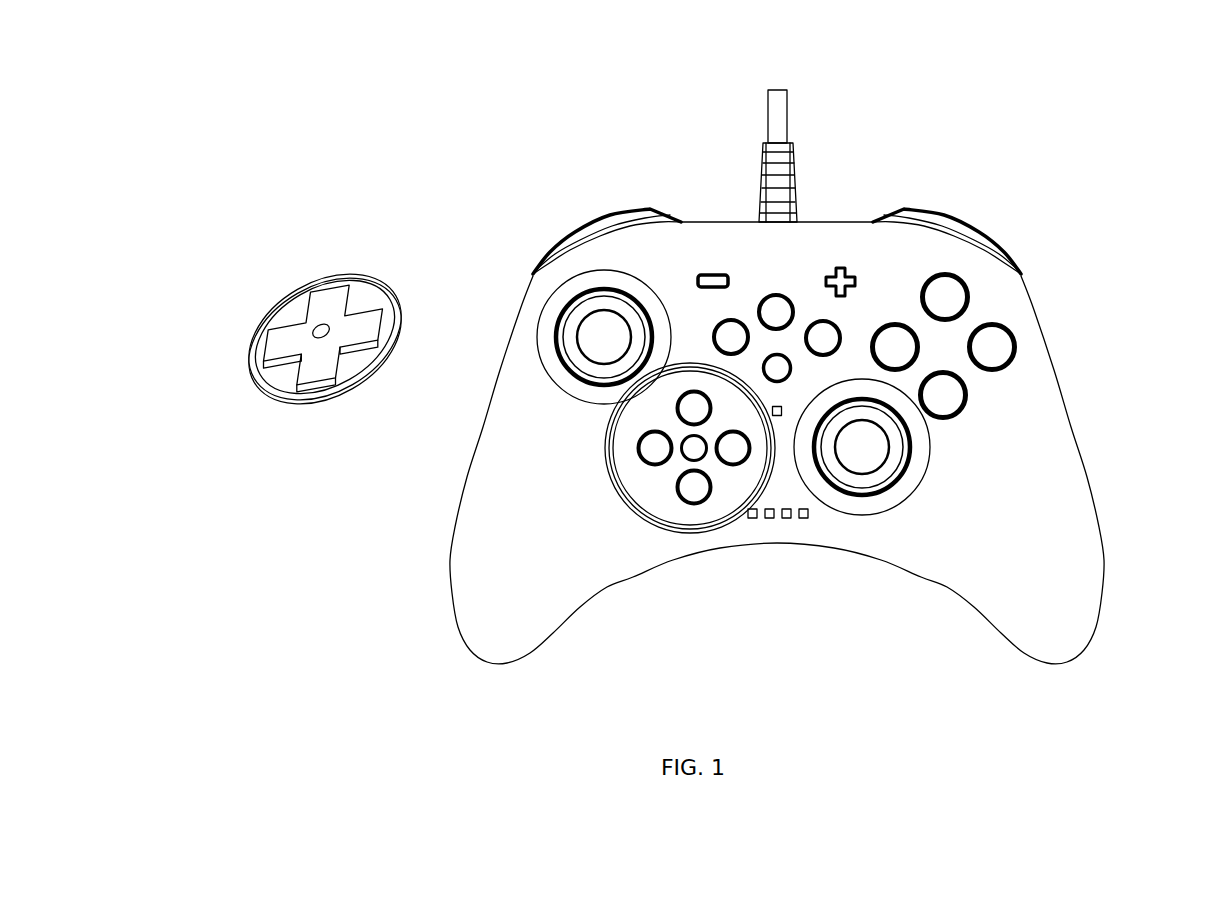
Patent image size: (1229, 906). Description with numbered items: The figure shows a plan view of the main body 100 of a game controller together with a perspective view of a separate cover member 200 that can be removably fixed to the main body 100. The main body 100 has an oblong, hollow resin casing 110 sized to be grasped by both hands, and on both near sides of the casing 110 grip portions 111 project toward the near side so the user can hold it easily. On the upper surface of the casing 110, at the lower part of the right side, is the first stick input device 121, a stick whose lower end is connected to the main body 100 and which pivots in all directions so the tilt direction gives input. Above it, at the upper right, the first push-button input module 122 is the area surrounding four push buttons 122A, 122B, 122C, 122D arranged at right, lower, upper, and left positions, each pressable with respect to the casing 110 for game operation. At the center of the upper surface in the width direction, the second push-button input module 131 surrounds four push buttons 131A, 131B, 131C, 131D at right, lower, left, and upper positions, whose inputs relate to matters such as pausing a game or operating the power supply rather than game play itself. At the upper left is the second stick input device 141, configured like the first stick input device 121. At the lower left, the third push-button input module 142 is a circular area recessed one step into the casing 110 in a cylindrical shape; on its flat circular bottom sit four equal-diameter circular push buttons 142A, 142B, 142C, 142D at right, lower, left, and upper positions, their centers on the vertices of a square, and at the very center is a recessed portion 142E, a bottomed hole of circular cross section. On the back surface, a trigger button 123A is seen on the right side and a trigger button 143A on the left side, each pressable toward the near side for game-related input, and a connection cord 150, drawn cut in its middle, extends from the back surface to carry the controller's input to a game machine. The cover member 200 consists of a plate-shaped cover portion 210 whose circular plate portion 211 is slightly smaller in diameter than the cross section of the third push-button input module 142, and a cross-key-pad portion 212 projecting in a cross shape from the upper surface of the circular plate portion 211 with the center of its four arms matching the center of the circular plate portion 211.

The main body 100 is at (1121, 146).
The casing 110 is at (852, 550).
The grip portions 111 is at (468, 625).
The first stick input device 121 is at (873, 460).
The first push-button input module 122 is at (998, 306).
The push button 122A is at (995, 348).
The push button 122B is at (955, 401).
The push button 122C is at (895, 345).
The push button 122D is at (950, 292).
The trigger button 123A is at (976, 229).
The second push-button input module 131 is at (760, 273).
The push button 131A is at (833, 325).
The push button 131B is at (781, 360).
The push button 131C is at (735, 330).
The push button 131D is at (778, 305).
The second stick input device 141 is at (587, 329).
The third push-button input module 142 is at (603, 460).
The push button 142A is at (735, 452).
The push button 142B is at (695, 495).
The push button 142C is at (650, 453).
The push button 142D is at (705, 410).
The recessed portion 142E is at (690, 445).
The trigger button 143A is at (578, 229).
The connection cord 150 is at (786, 98).
The cover member 200 is at (298, 286).
The cover portion 210 is at (253, 392).
The circular plate portion 211 is at (258, 376).
The cross-key-pad portion 212 is at (297, 365).